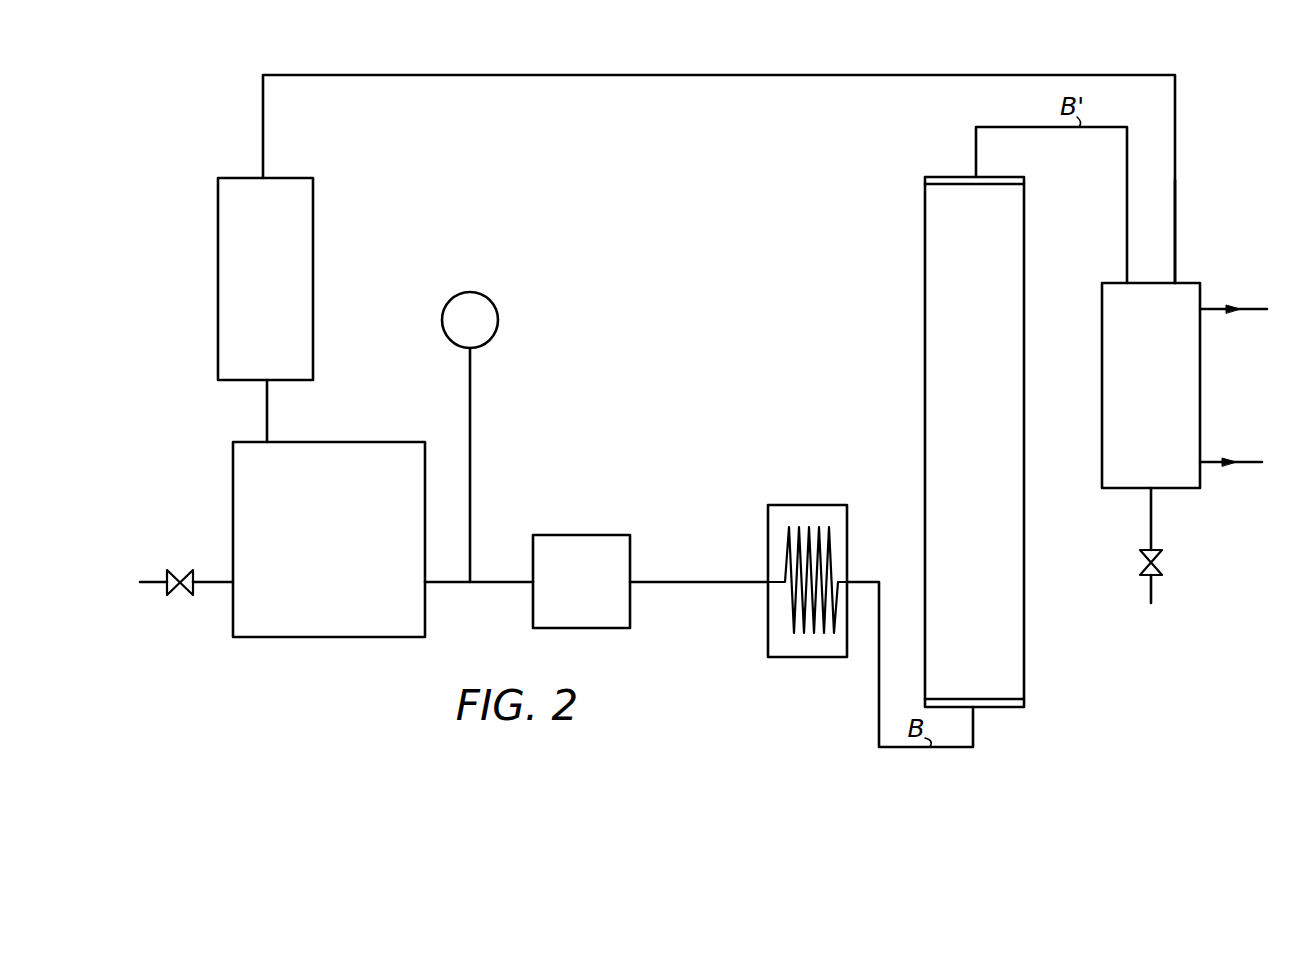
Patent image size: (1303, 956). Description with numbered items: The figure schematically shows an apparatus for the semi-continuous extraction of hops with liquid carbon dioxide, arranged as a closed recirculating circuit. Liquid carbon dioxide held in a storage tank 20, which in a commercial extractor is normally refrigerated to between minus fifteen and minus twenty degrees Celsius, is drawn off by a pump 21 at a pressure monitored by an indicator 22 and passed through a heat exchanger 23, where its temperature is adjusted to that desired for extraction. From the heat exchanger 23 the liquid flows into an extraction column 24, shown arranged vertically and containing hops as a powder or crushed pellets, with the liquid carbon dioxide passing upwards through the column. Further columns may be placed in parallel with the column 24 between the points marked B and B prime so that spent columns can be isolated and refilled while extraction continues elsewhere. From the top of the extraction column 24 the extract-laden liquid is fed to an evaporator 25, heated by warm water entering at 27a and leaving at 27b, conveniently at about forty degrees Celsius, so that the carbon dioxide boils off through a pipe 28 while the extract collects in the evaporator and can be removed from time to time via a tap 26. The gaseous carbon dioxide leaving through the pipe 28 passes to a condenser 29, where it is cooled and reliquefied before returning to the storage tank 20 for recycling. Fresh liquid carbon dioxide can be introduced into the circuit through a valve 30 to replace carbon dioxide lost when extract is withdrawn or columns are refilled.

The storage tank 20 is at (312, 549).
The pump 21 is at (568, 592).
The indicator 22 is at (499, 316).
The heat exchanger 23 is at (800, 505).
The extraction column 24 is at (960, 457).
The evaporator 25 is at (1137, 399).
The tap 26 is at (1143, 553).
The warm water inlet 27a is at (1238, 459).
The warm water outlet 27b is at (1238, 307).
The pipe 28 is at (1177, 239).
The condenser 29 is at (252, 287).
The valve 30 is at (172, 570).